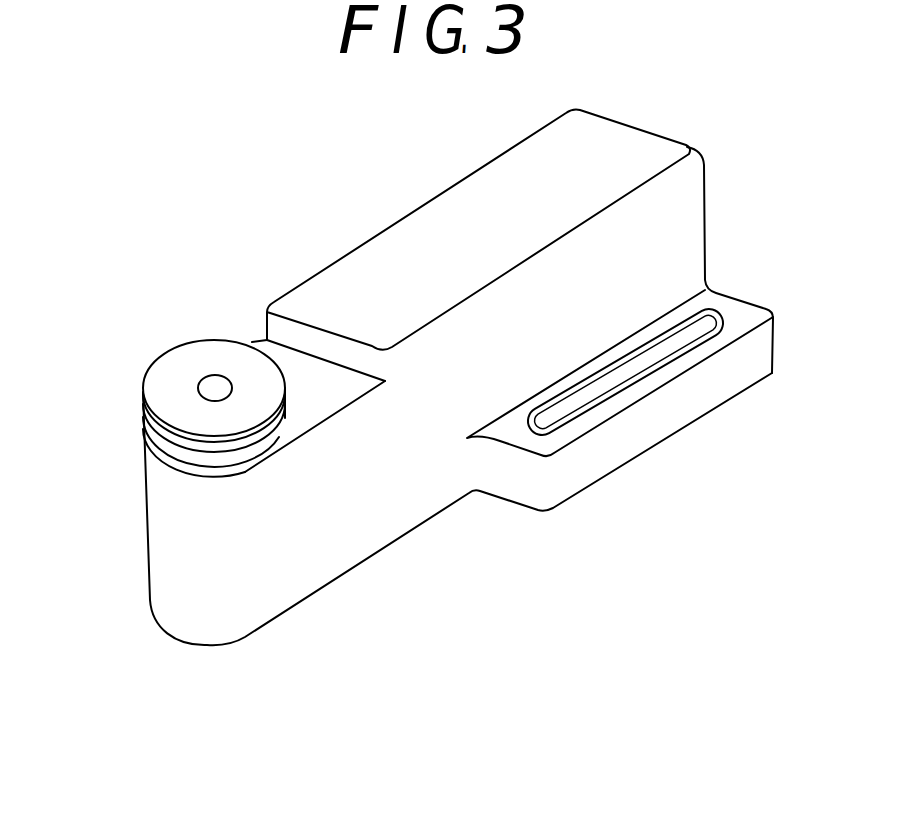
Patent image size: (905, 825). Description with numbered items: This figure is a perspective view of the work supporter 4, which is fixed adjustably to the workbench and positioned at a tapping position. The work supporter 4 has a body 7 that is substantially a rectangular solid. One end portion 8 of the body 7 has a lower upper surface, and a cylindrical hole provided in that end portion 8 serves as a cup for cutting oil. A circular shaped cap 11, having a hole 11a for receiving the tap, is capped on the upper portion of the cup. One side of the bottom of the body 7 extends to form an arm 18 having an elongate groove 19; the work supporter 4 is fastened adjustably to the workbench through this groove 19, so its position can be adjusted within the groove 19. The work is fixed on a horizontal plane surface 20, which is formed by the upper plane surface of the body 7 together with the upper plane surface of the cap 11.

The work supporter 4 is at (316, 228).
The body 7 is at (694, 222).
The end portion 8 is at (330, 397).
The cap 11 is at (190, 362).
The center hole of boss 11a is at (213, 393).
The arm 18 is at (578, 462).
The elongate groove 19 is at (607, 383).
The horizontal plane surface 20 is at (465, 225).